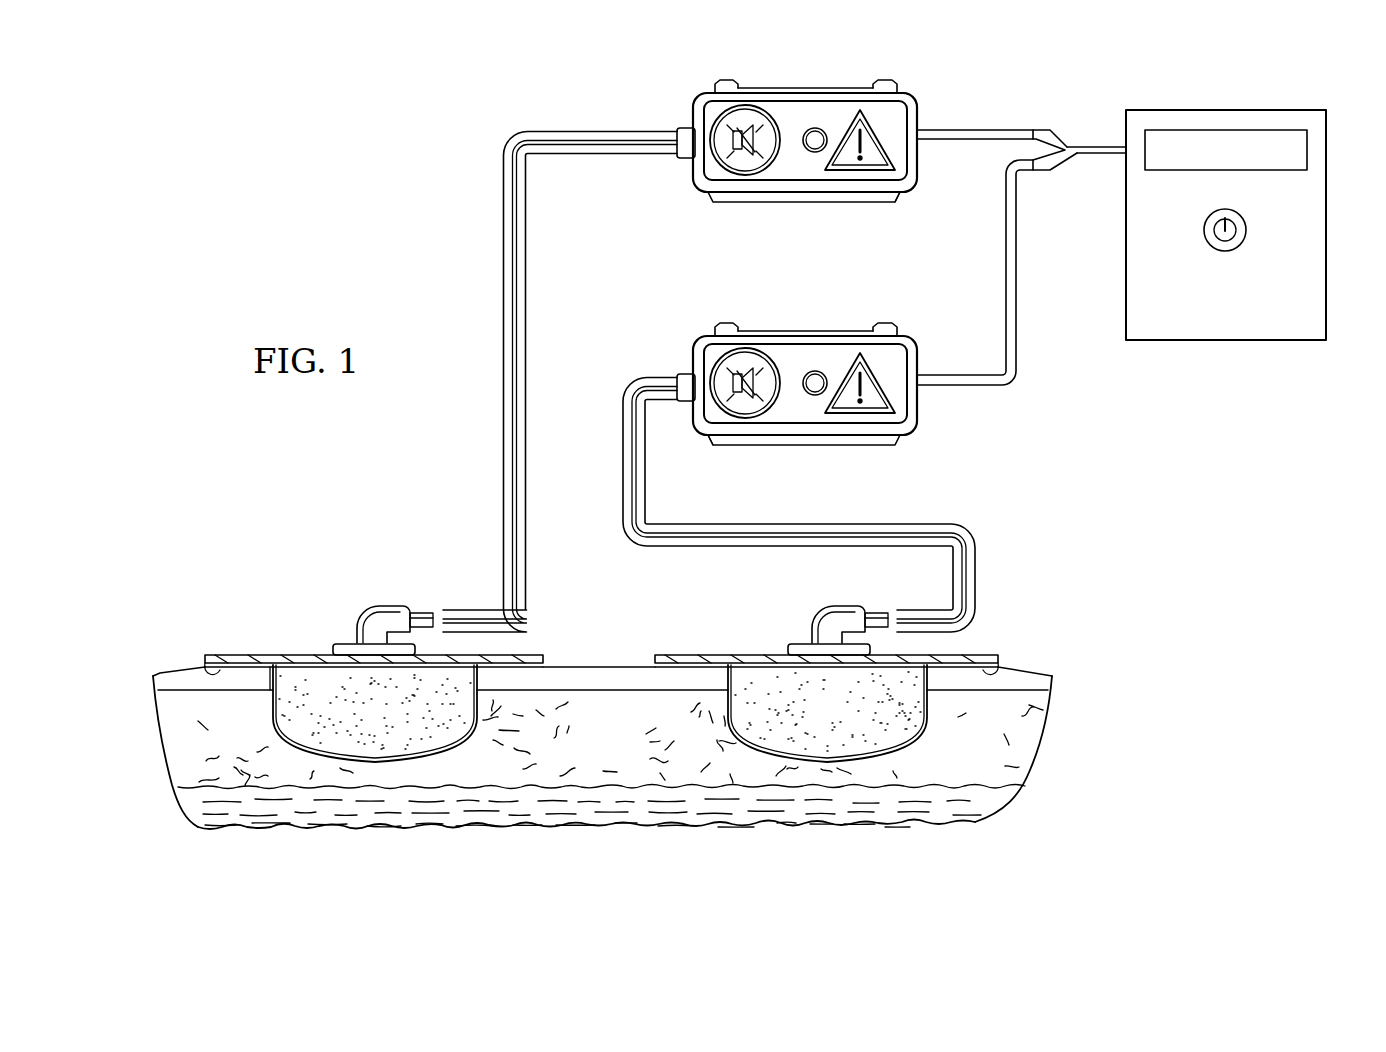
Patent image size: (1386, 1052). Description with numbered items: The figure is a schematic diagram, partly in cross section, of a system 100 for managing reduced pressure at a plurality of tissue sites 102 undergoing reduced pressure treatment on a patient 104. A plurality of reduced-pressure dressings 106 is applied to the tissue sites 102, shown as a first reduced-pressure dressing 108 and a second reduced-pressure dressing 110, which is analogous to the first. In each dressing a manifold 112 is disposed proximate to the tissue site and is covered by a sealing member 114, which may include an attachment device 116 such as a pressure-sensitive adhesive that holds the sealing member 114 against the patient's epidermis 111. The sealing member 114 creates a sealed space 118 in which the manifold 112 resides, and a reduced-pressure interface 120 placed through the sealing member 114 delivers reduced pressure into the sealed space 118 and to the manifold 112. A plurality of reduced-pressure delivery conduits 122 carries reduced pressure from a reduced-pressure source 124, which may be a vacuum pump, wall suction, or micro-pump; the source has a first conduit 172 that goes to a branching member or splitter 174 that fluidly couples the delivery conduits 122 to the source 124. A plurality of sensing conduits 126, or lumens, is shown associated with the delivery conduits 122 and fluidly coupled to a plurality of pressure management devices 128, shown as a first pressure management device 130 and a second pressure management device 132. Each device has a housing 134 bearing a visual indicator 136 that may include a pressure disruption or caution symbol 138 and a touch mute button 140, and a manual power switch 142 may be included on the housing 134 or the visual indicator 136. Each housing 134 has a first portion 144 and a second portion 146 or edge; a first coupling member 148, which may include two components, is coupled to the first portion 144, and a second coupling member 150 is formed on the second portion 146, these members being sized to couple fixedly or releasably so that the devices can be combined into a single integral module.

The system for managing reduced pressure 100 is at (402, 170).
The tissue sites 102 is at (450, 741).
The patient 104 is at (1042, 741).
The reduced-pressure dressings 106 is at (540, 637).
The first reduced-pressure dressing 108 is at (247, 652).
The second reduced-pressure dressing 110 is at (768, 648).
The epidermis 111 is at (1055, 689).
The manifold 112 is at (392, 726).
The sealing member 114 is at (317, 653).
The attachment device 116 is at (203, 667).
The sealed space 118 is at (268, 696).
The reduced-pressure interface 120 is at (368, 610).
The reduced-pressure delivery conduits 122 is at (504, 254).
The reduced-pressure source 124 is at (1230, 110).
The sensing conduits 126 is at (525, 254).
The pressure management devices 128 is at (690, 110).
The first pressure management device 130 is at (772, 100).
The second pressure management device 132 is at (906, 433).
The housing 134 is at (918, 158).
The visual indicator 136 is at (905, 95).
The pressure disruption or caution symbol 138 is at (840, 127).
The touch mute button 140 is at (774, 118).
The manual power switch 142 is at (813, 153).
The first portion 144 is at (913, 95).
The second portion 146 is at (900, 194).
The first coupling member 148 is at (730, 80).
The second coupling member 150 is at (742, 203).
The first conduit 172 is at (1106, 146).
The branching member or splitter 174 is at (1060, 130).